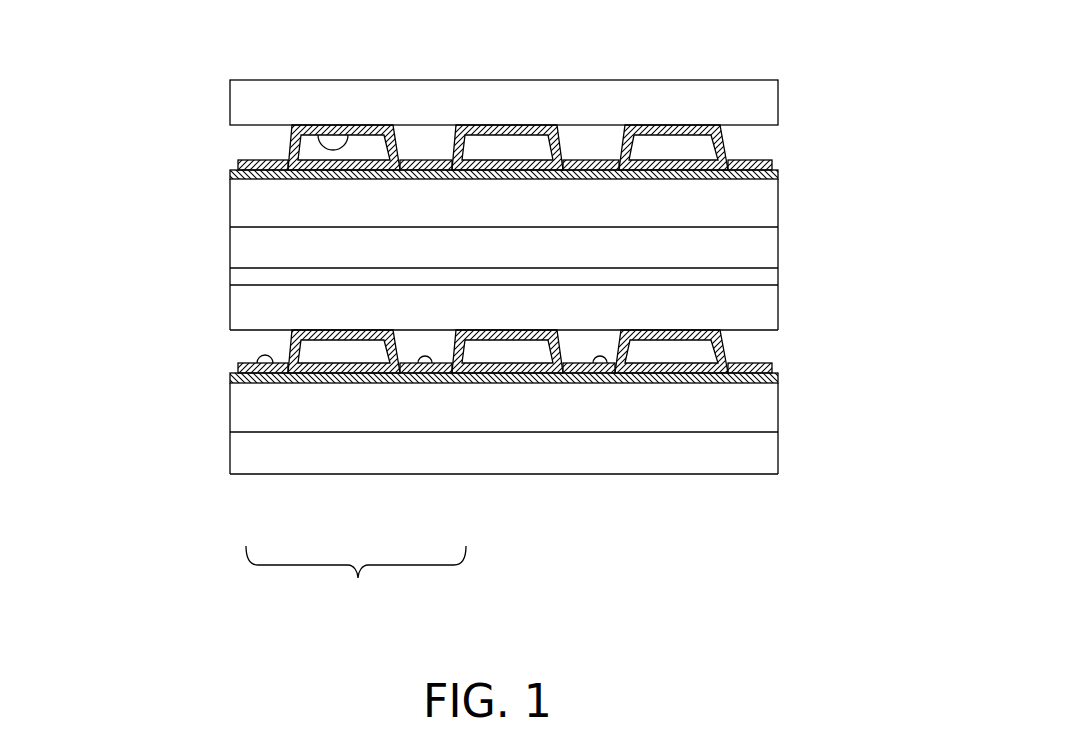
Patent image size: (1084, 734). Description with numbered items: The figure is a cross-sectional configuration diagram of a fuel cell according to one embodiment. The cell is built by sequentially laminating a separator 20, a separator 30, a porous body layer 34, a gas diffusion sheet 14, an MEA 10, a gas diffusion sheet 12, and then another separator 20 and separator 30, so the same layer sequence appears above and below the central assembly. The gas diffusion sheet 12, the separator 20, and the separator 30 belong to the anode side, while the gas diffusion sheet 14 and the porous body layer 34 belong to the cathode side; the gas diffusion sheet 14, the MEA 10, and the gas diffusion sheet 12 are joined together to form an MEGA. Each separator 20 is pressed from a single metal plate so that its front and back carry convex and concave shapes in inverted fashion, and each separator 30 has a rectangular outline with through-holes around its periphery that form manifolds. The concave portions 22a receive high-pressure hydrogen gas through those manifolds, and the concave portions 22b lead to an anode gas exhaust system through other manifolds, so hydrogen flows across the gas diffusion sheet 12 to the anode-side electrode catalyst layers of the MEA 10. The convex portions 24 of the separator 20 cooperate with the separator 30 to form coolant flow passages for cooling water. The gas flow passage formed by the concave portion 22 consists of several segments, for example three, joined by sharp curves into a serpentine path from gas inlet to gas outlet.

The MEA 10 is at (237, 277).
The gas diffusion sheet 12 is at (237, 97).
The gas diffusion sheet 14 is at (237, 240).
The separator 20 is at (238, 163).
The concave portion 22 is at (356, 579).
The concave portion 22a is at (260, 160).
The concave portion 22b is at (427, 160).
The convex portion 24 is at (351, 133).
The separator 30 is at (230, 175).
The porous body layer 34 is at (237, 197).